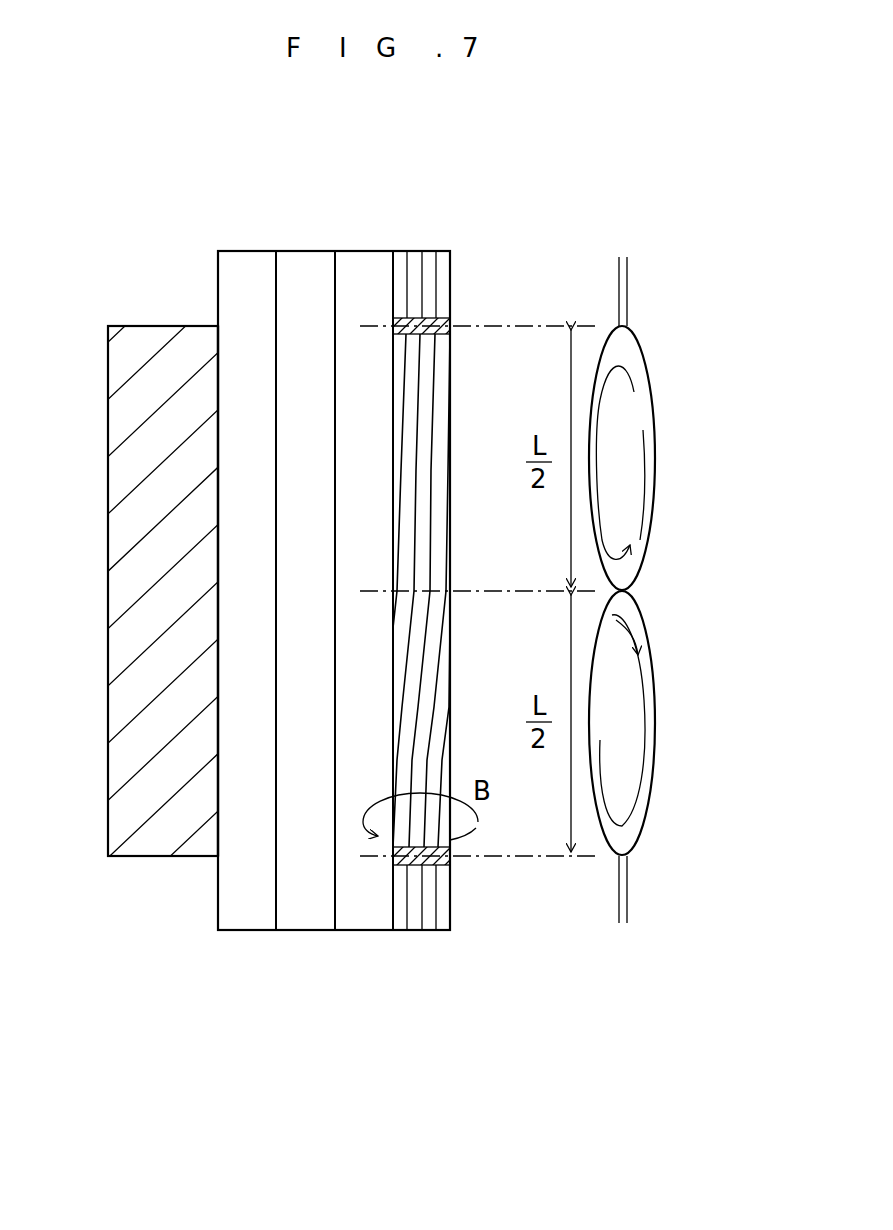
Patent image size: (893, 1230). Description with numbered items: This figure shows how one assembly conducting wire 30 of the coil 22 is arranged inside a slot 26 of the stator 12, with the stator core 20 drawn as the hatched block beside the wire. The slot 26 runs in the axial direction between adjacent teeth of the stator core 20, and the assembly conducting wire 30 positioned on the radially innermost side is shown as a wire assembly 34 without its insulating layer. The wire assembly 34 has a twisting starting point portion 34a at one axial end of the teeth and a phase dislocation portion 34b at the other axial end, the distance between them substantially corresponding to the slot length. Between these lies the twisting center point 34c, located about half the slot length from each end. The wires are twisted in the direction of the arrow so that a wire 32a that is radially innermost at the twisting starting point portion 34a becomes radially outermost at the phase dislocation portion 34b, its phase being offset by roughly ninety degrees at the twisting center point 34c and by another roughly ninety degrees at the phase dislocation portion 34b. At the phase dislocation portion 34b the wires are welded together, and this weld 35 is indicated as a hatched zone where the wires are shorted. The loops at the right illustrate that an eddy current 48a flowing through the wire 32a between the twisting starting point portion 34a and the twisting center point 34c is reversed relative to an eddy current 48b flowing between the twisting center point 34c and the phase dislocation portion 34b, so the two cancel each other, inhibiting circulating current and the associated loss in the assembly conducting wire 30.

The stator 12 is at (150, 276).
The stator core 20 is at (108, 608).
The coil 22 is at (450, 238).
The slot 26 is at (218, 830).
The assembly conducting wire 30 is at (445, 985).
The wire 32a is at (443, 307).
The wire assembly 34 is at (462, 258).
The twisting starting point portion 34a is at (452, 322).
The phase dislocation portion 34b is at (450, 858).
The twisting center point 34c is at (452, 591).
The weld 35 is at (440, 335).
The eddy current 48a is at (600, 452).
The eddy current 48b is at (600, 722).